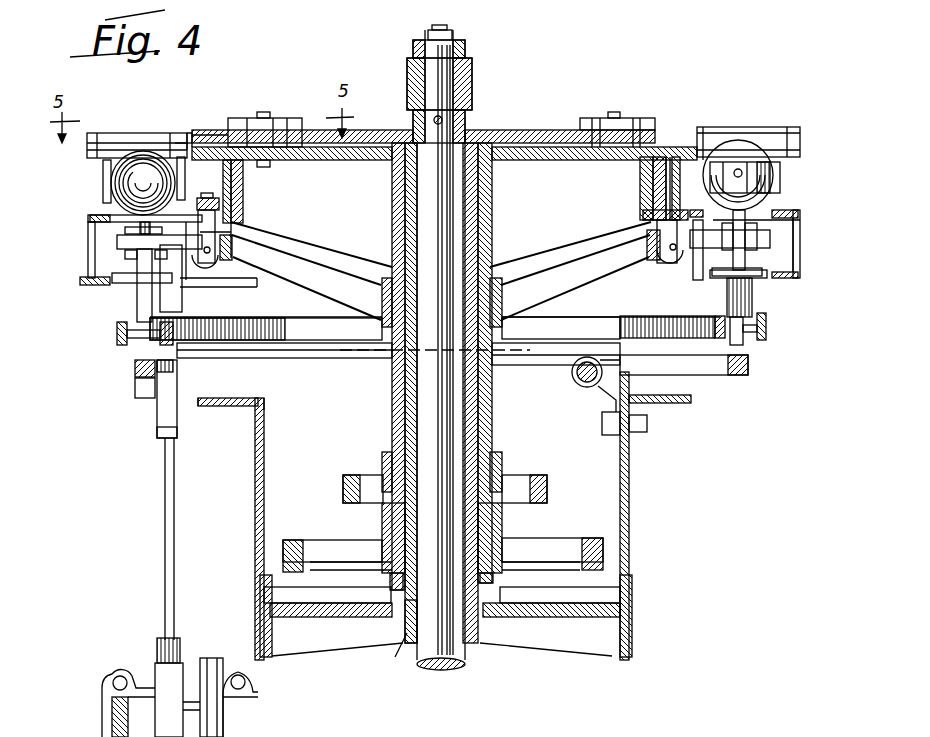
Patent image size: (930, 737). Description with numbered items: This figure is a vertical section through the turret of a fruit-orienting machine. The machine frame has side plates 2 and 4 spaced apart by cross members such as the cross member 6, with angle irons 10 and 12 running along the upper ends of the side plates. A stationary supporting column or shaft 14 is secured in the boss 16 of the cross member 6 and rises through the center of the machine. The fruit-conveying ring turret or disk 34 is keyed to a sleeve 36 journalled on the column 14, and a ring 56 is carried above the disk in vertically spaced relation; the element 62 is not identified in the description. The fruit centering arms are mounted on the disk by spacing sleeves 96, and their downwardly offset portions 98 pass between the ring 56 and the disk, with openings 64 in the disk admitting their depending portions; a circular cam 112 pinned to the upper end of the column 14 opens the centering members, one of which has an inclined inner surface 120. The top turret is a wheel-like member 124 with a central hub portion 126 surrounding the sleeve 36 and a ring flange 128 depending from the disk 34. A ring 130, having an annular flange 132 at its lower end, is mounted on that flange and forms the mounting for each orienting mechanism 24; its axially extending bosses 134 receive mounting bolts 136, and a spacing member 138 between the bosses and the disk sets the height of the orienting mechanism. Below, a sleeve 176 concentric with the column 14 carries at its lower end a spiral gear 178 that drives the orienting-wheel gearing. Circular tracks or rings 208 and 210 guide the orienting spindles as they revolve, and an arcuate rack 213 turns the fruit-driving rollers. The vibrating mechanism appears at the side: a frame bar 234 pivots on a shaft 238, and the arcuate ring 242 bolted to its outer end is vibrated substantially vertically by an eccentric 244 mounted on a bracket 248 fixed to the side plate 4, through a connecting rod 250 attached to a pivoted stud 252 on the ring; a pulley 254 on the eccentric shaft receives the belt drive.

The side plate 2 is at (467, 516).
The side plate 4 is at (258, 537).
The cross member 6 is at (575, 613).
The angle iron 10 is at (681, 402).
The angle iron 12 is at (217, 412).
The stationary supporting column or shaft 14 is at (473, 72).
The boss 16 is at (353, 680).
The orienting mechanism 24 is at (152, 240).
The ring turret or disk 34 is at (320, 152).
The sleeve 36 is at (472, 190).
The ring 56 is at (210, 130).
The left bracket 62 is at (121, 133).
The opening 64 is at (793, 150).
The spacing sleeve 96 is at (265, 137).
The downwardly offset portion 98 is at (208, 140).
The circular cam 112 is at (510, 130).
The inner surface 120 is at (117, 187).
The wheel-like member 124 is at (300, 296).
The central hub portion 126 is at (398, 200).
The ring flange 128 is at (248, 210).
The ring 130 is at (245, 181).
The annular flange 132 is at (300, 296).
The boss 134 is at (657, 198).
The mounting bolt 136 is at (698, 143).
The spacing member 138 is at (635, 160).
The sleeve 176 is at (490, 408).
The spiral gear 178 is at (530, 472).
The circular track or ring 208 is at (767, 323).
The circular track or ring 210 is at (717, 325).
The arcuate rack 213 is at (788, 210).
The frame bar 234 is at (347, 355).
The shaft 238 is at (577, 383).
The arcuate ring 242 is at (133, 372).
The eccentric 244 is at (157, 675).
The bracket 248 is at (147, 723).
The connecting rod 250 is at (163, 463).
The pivoted stud 252 is at (180, 387).
The pulley 254 is at (212, 657).